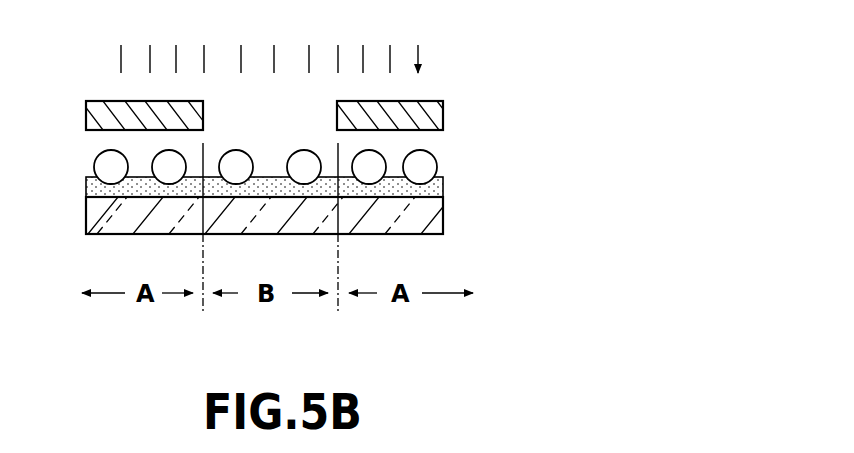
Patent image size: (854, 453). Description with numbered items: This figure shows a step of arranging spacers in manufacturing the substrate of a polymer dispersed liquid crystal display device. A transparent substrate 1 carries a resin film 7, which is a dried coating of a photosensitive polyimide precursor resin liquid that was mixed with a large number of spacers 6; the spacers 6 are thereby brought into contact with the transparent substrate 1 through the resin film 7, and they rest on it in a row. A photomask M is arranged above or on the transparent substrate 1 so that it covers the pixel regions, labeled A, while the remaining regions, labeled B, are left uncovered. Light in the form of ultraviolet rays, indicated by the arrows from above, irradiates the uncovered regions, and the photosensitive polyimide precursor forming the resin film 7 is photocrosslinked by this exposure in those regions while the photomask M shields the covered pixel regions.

The transparent substrate 1 is at (441, 222).
The spacers 6 is at (100, 162).
The resin film 7 is at (441, 188).
The photomask M is at (443, 117).